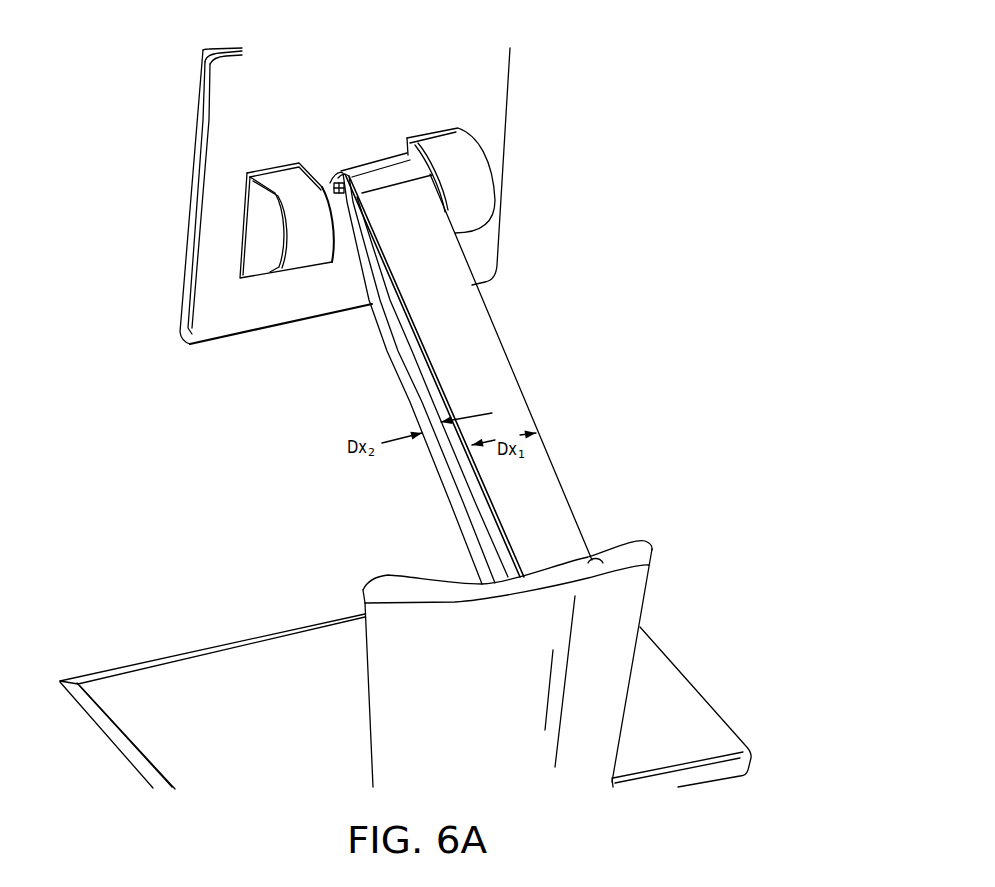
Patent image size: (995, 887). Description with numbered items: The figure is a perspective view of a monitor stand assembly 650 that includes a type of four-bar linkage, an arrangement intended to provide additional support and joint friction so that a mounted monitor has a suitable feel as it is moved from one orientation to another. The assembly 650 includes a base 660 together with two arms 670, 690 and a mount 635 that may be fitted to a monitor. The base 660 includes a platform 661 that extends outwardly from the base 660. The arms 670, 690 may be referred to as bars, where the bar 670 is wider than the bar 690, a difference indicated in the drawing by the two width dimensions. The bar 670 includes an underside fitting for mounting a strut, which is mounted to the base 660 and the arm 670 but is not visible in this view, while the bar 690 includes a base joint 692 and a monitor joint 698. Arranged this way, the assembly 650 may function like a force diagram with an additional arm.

The monitor stand assembly 650 is at (578, 43).
The mount 635 is at (475, 195).
The monitor joint 698 is at (337, 182).
The arm 670 is at (502, 368).
The arm 690 is at (415, 408).
The base joint 692 is at (460, 563).
The base 660 is at (633, 610).
The platform 661 is at (698, 722).